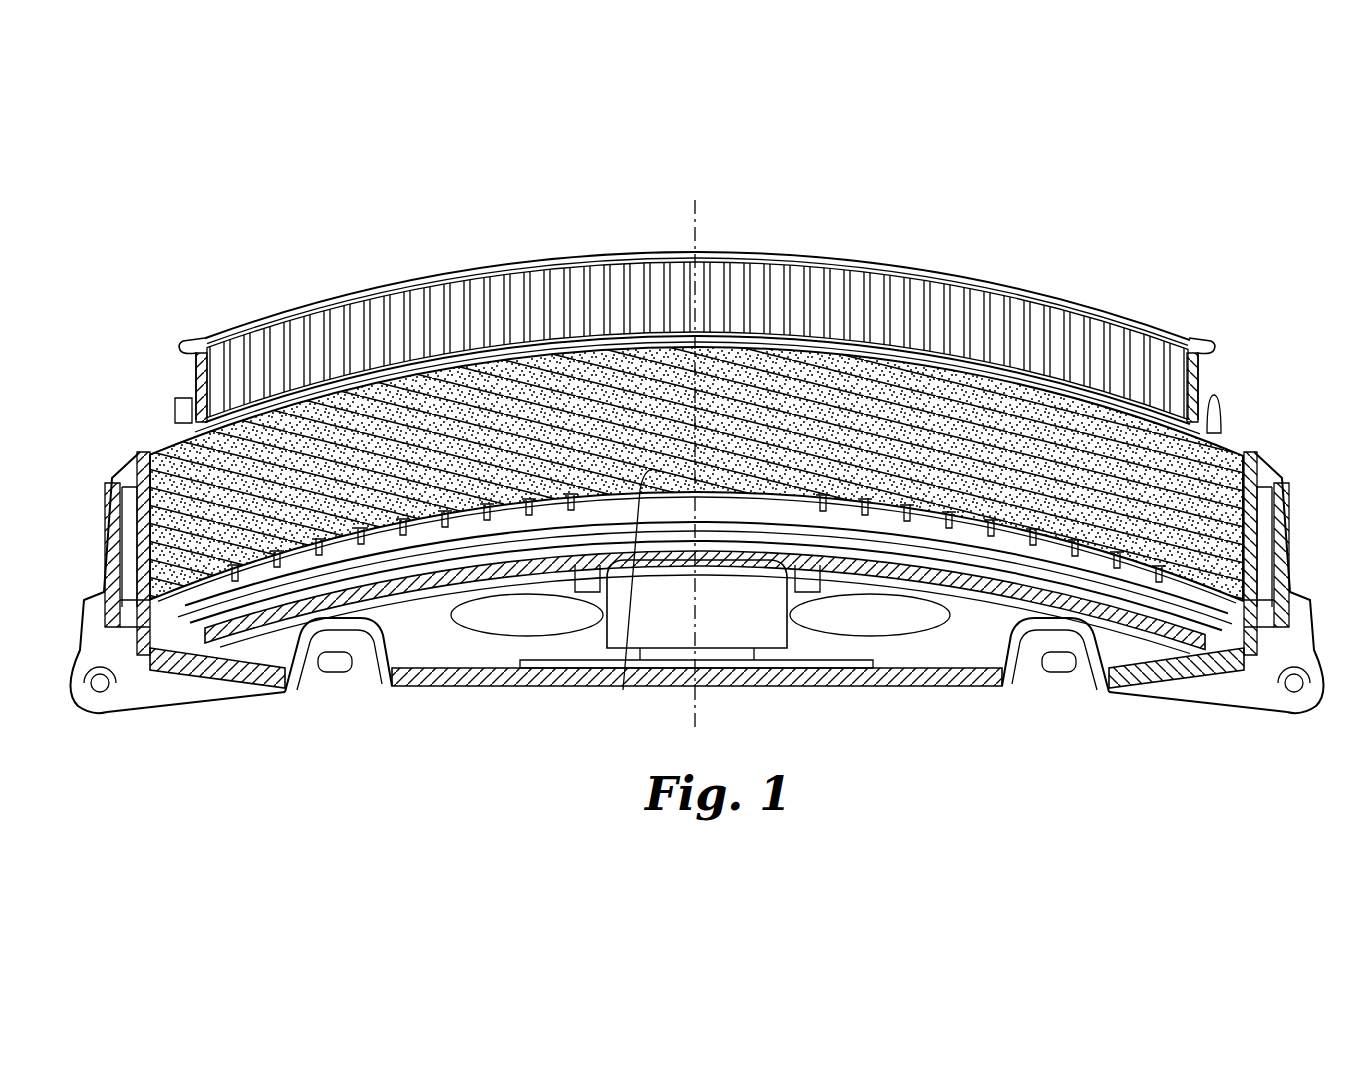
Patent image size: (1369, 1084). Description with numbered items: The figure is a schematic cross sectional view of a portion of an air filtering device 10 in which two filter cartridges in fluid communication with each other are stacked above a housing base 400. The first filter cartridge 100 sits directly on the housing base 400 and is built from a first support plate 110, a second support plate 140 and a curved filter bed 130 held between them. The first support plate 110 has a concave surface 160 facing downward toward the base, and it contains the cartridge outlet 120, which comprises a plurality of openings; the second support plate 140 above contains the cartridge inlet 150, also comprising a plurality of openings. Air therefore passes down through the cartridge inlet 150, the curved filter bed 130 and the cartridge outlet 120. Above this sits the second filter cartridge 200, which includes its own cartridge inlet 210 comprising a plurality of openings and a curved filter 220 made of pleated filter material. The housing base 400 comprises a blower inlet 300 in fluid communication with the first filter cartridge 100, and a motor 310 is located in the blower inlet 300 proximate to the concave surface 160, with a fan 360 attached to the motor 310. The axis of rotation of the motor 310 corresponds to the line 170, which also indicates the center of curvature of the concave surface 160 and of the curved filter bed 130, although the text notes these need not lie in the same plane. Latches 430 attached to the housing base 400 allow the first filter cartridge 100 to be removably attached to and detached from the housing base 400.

The air filtering device 10 is at (1190, 256).
The first filter cartridge 100 is at (710, 494).
The first support plate 110 is at (1211, 600).
The cartridge outlet 120 is at (446, 515).
The curved filter bed 130 is at (181, 452).
The second support plate 140 is at (1221, 437).
The cartridge inlet 150 is at (381, 374).
The concave surface 160 is at (632, 593).
The line 170 is at (694, 211).
The second filter cartridge 200 is at (729, 313).
The cartridge inlet 210 is at (764, 258).
The curved filter 220 is at (274, 336).
The blower inlet 300 is at (597, 578).
The motor 310 is at (668, 652).
The fan 360 is at (888, 614).
The housing base 400 is at (805, 674).
The latches 430 is at (107, 490).